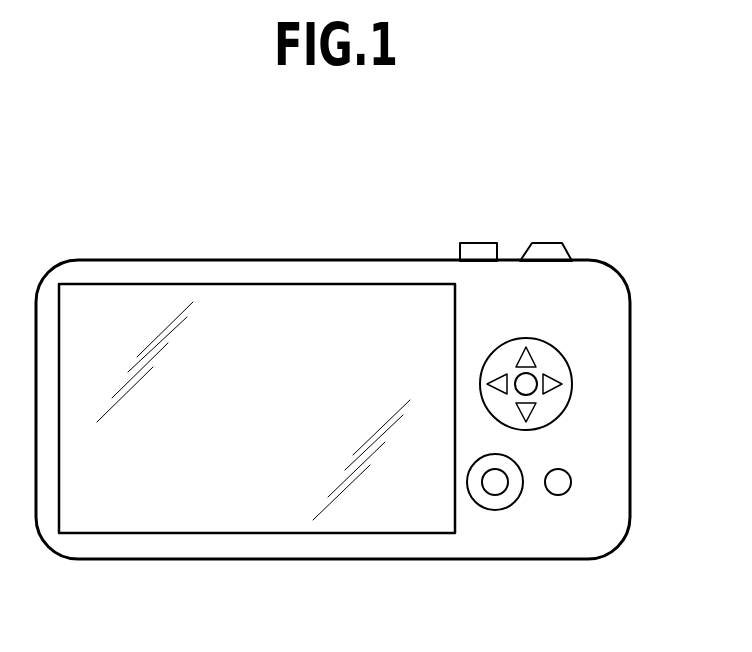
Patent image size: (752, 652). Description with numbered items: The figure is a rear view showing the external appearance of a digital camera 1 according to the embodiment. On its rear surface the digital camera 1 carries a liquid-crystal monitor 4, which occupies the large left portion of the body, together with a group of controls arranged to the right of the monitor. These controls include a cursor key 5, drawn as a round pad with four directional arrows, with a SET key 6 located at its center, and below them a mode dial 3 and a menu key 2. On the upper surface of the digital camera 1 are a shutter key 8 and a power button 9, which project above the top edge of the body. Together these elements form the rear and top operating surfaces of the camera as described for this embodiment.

The digital camera 1 is at (143, 178).
The menu key 2 is at (560, 481).
The mode dial 3 is at (497, 502).
The liquid-crystal monitor 4 is at (402, 272).
The cursor key 5 is at (555, 365).
The SET key 6 is at (528, 392).
The shutter key 8 is at (478, 249).
The power button 9 is at (546, 251).